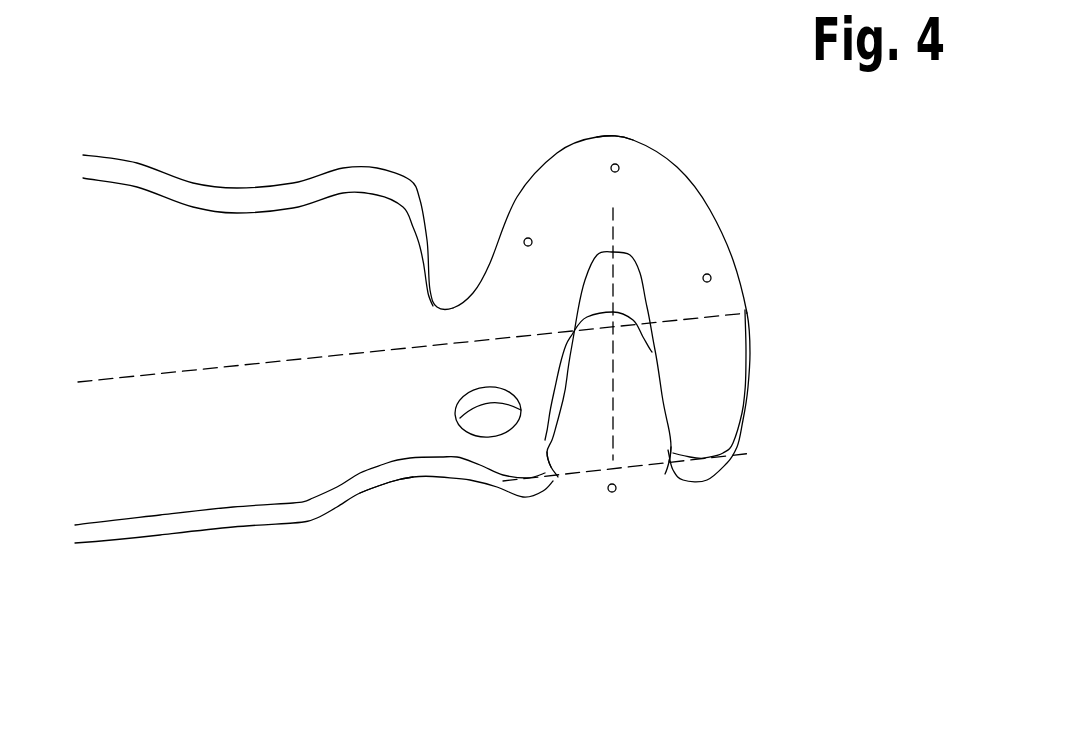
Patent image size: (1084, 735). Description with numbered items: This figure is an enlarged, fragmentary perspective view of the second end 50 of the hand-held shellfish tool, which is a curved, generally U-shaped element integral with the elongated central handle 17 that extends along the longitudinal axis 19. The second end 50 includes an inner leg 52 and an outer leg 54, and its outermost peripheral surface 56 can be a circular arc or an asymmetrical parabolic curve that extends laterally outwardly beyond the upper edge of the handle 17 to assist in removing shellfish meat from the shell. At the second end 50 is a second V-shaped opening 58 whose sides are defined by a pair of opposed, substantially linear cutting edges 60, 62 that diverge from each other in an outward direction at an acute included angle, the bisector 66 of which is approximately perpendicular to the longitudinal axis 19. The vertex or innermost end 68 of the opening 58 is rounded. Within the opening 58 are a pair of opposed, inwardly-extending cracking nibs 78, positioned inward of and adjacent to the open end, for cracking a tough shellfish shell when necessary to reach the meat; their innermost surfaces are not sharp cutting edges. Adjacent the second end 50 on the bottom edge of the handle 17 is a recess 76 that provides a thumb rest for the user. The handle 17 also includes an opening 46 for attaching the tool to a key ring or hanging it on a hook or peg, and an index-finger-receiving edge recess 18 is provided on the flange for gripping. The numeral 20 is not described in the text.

The handle 17 is at (227, 474).
The index-finger-receiving edge recess 18 is at (268, 182).
The longitudinal axis 19 is at (412, 317).
The fastener clip 20 is at (648, 335).
The opening 46 is at (500, 504).
The second end 50 is at (680, 125).
The inner leg 52 is at (484, 190).
The outer leg 54 is at (766, 235).
The outermost peripheral surface 56 is at (618, 83).
The second V-shaped opening 58 is at (645, 534).
The cutting edge 60 is at (745, 371).
The cutting edge 62 is at (568, 367).
The bisector 66 is at (706, 294).
The innermost end 68 is at (611, 266).
The recess 76 is at (411, 523).
The cracking nib 78 is at (621, 503).